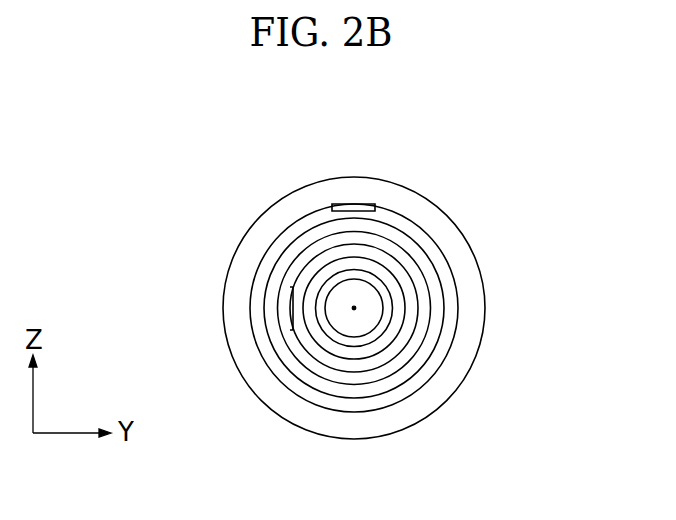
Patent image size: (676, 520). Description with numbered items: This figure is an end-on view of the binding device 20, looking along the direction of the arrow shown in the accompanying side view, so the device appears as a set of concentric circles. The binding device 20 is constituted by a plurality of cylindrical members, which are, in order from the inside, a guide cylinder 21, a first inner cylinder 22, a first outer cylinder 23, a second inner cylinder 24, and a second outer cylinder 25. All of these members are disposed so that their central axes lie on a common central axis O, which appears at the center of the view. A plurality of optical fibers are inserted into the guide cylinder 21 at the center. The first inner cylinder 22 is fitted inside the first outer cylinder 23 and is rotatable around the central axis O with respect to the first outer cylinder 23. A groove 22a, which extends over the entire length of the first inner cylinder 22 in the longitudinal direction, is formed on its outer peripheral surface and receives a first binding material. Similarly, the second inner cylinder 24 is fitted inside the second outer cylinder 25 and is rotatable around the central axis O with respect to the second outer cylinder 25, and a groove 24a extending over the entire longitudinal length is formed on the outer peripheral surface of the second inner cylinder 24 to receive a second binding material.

The binding device 20 is at (430, 181).
The guide cylinder 21 is at (380, 282).
The first inner cylinder 22 is at (412, 287).
The groove 22a is at (288, 297).
The first outer cylinder 23 is at (428, 303).
The second inner cylinder 24 is at (448, 331).
The groove 24a is at (338, 205).
The second outer cylinder 25 is at (460, 372).
The central axis O is at (351, 311).